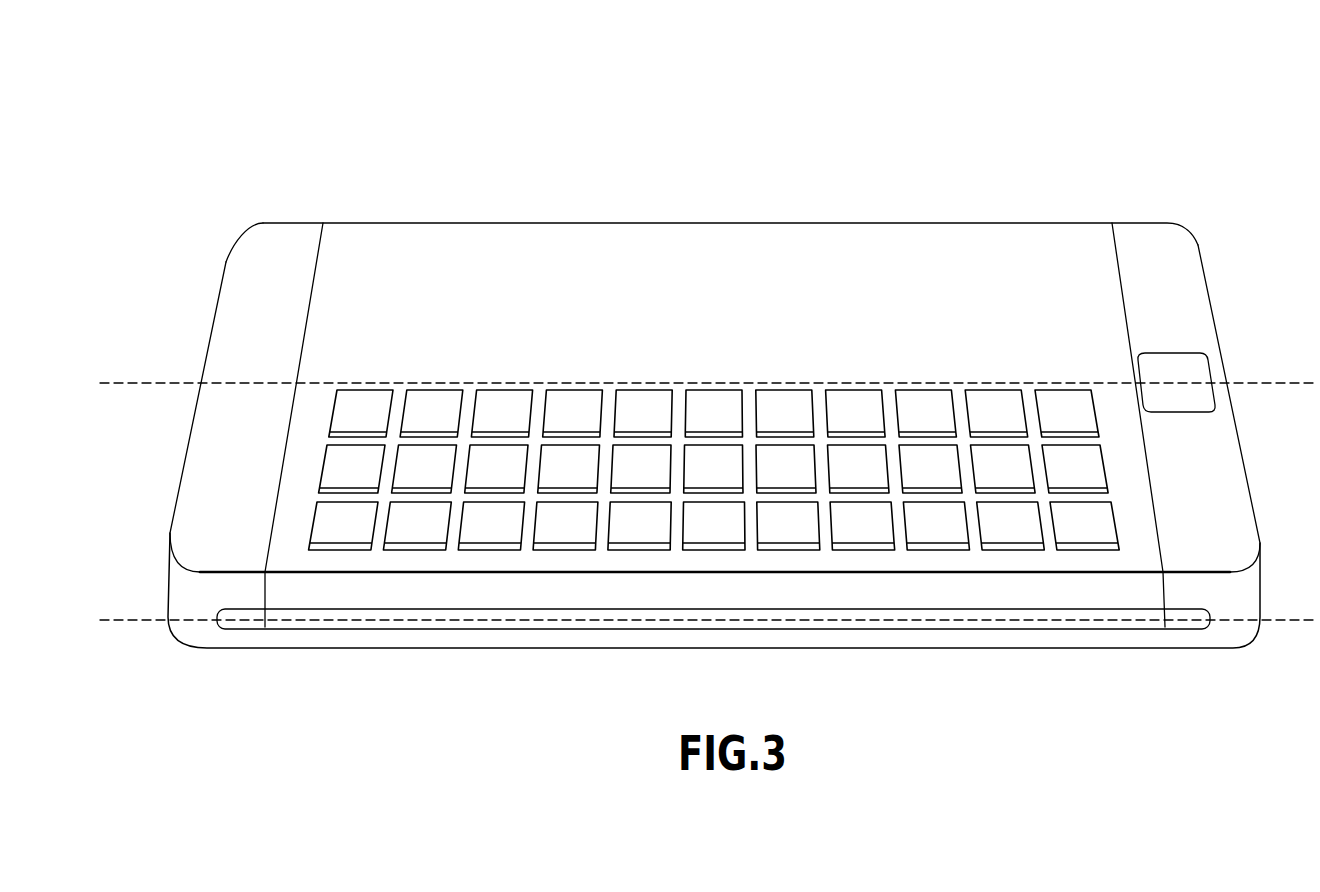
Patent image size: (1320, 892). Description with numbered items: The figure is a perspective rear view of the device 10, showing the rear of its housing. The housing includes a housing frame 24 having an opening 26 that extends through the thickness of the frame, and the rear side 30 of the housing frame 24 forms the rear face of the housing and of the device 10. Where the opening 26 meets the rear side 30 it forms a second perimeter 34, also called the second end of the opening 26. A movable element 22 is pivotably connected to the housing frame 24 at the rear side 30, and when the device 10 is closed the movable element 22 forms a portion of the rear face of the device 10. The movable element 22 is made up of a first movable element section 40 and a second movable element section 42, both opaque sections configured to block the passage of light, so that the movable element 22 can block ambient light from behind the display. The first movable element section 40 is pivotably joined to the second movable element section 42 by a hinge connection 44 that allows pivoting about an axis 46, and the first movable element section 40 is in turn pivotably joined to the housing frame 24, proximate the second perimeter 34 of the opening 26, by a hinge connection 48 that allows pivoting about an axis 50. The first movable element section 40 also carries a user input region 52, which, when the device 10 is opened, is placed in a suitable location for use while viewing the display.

The device 10 is at (196, 127).
The movable element 22 is at (1067, 247).
The housing frame 24 is at (298, 258).
The opening 26 is at (1147, 462).
The rear side 30 is at (242, 312).
The second perimeter 34 is at (1158, 530).
The first movable element section 40 is at (540, 589).
The second movable element section 42 is at (670, 290).
The hinge connection 44 is at (850, 382).
The axis 46 is at (1270, 383).
The hinge connection 48 is at (897, 613).
The axis 50 is at (1282, 621).
The user input region 52 is at (803, 527).